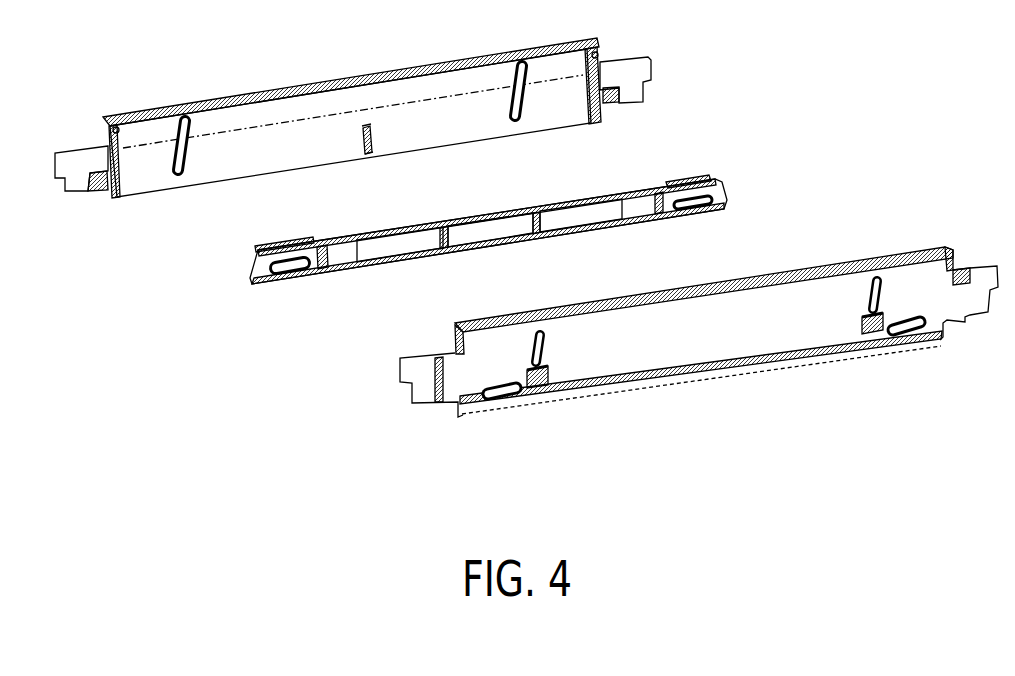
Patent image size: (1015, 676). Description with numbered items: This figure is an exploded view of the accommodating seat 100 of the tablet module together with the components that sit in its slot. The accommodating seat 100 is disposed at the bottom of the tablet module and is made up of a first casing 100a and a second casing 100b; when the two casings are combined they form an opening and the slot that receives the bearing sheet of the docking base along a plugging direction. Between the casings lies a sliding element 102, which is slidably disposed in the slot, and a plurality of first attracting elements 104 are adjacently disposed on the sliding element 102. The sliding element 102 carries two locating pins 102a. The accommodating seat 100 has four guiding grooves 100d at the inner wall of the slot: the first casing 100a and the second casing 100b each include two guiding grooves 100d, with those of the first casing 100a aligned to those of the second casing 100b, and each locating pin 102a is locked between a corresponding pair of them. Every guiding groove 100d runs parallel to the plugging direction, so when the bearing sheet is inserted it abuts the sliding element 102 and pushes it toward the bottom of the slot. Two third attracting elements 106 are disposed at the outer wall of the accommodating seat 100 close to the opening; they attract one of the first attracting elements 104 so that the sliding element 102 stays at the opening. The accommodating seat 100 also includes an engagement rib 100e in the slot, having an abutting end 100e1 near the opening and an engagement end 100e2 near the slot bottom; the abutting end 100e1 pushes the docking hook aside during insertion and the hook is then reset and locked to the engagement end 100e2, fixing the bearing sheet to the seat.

The accommodating seat 100 is at (72, 286).
The first casing 100a is at (170, 186).
The second casing 100b is at (410, 388).
The guiding groove 100d is at (165, 124).
The engagement rib 100e is at (372, 136).
The abutting end 100e1 is at (376, 162).
The engagement end 100e2 is at (355, 118).
The sliding element 102 is at (722, 198).
The locating pin 102a is at (313, 251).
The first attracting element 104 is at (490, 232).
The third attracting element 106 is at (906, 334).